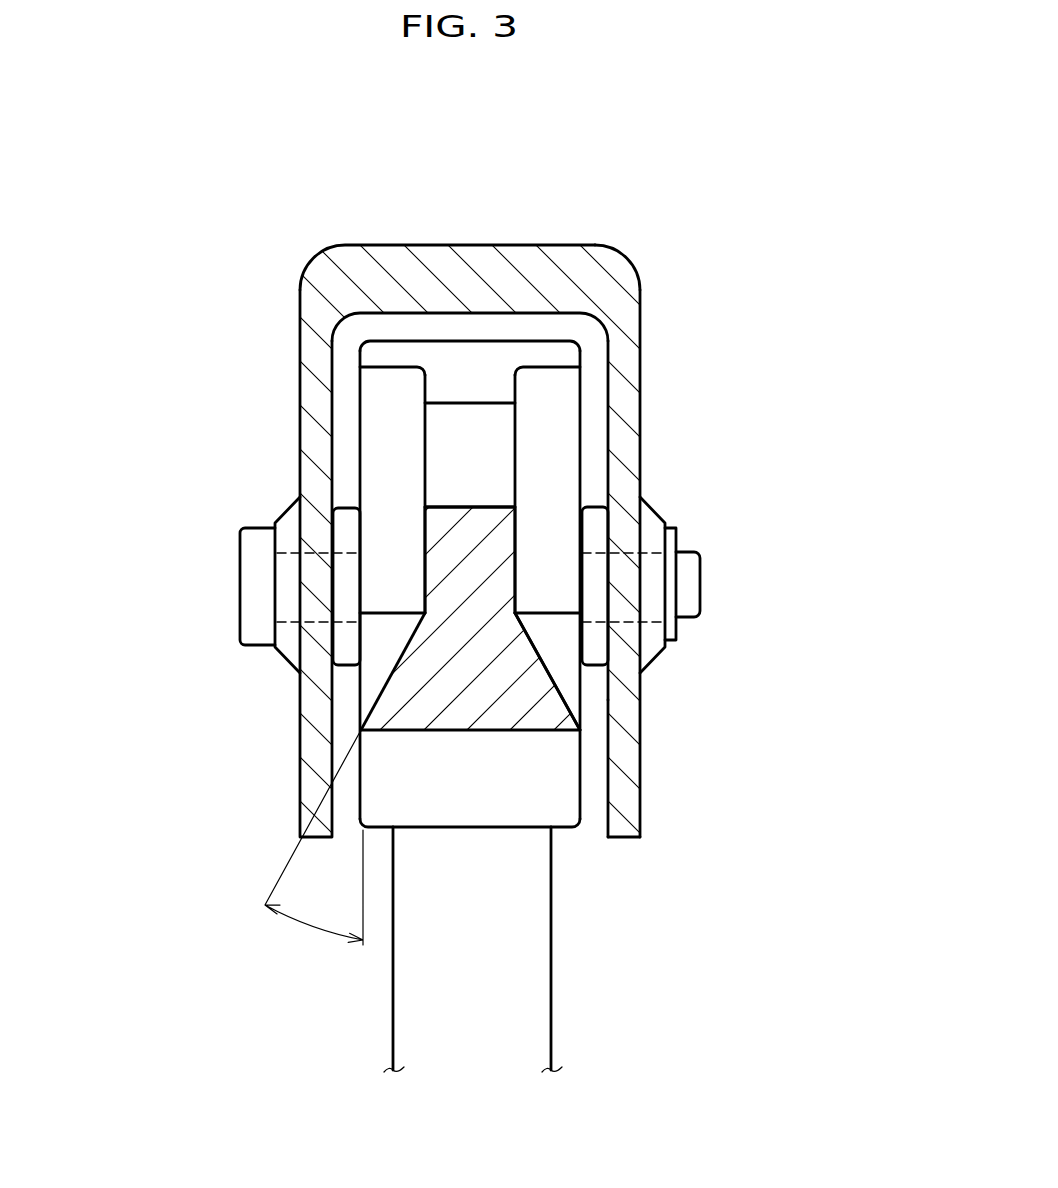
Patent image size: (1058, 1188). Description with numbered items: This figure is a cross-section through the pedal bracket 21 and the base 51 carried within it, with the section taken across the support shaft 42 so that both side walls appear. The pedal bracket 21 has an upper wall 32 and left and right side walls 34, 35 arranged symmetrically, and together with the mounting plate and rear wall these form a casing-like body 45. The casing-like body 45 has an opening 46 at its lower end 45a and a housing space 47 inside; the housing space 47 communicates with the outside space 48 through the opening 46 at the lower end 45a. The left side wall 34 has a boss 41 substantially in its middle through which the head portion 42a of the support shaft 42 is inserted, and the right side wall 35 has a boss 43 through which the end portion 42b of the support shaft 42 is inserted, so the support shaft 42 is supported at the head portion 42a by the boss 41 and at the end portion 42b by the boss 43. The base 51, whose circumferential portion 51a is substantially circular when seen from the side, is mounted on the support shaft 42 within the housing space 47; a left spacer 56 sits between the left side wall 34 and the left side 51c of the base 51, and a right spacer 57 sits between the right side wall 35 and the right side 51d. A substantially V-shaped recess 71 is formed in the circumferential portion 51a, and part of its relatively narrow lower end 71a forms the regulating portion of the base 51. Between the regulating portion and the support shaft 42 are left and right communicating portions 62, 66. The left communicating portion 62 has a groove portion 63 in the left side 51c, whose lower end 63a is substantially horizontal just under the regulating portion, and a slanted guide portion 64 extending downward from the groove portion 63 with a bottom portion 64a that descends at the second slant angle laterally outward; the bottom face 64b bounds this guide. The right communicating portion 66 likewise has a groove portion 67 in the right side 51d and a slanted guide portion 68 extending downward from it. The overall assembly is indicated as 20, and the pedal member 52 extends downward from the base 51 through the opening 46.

The bracket assembly 20 is at (661, 220).
The pedal bracket 21 is at (658, 282).
The upper wall 32 is at (465, 245).
The left side wall 34 is at (300, 432).
The right side wall 35 is at (641, 446).
The boss 41 is at (289, 655).
The support shaft 42 is at (250, 580).
The head portion 42a is at (257, 586).
The end portion 42b is at (690, 572).
The boss 43 is at (656, 645).
The casing-like body 45 is at (561, 246).
The lower end 45a is at (643, 822).
The opening 46 is at (606, 822).
The housing space 47 is at (400, 326).
The outside space 48 is at (717, 977).
The base 51 is at (598, 407).
The circumferential portion 51a is at (497, 362).
The left side 51c is at (360, 470).
The right side 51d is at (582, 436).
The shaft 52 is at (542, 977).
The left spacer 56 is at (347, 530).
The right spacer 57 is at (595, 522).
The left communicating portion 62 is at (153, 842).
The groove portion 63 is at (425, 565).
The lower end 63a is at (399, 611).
The slanted guide portion 64 is at (378, 700).
The bottom portion 64a is at (390, 657).
The bottom face 64b is at (362, 735).
The right communicating portion 66 is at (827, 837).
The groove portion 67 is at (688, 618).
The slanted guide portion 68 is at (563, 695).
The substantially V-shaped recess 71 is at (496, 430).
The lower end 71a is at (484, 504).